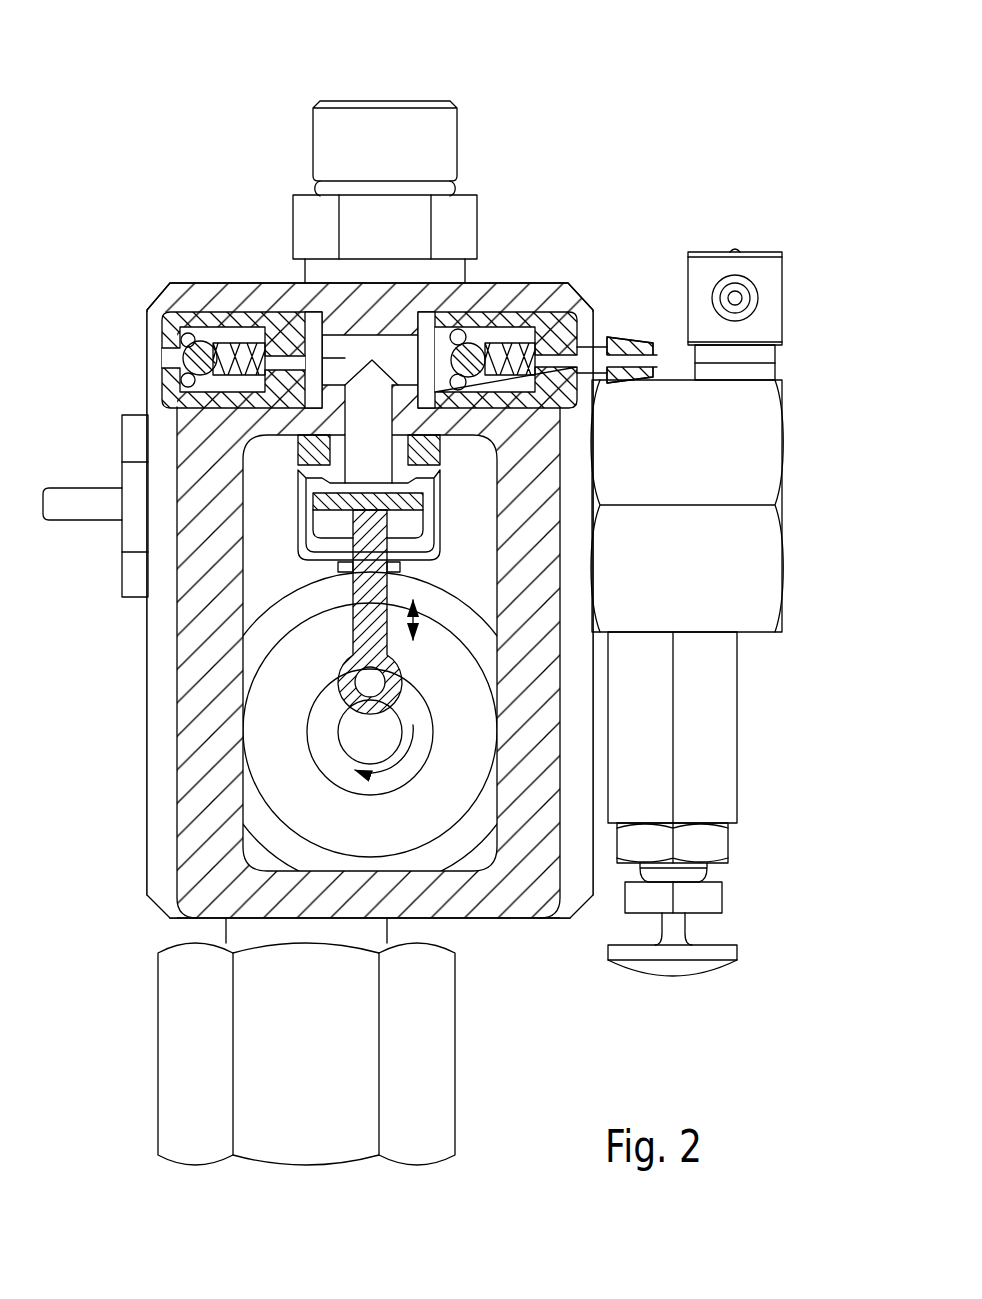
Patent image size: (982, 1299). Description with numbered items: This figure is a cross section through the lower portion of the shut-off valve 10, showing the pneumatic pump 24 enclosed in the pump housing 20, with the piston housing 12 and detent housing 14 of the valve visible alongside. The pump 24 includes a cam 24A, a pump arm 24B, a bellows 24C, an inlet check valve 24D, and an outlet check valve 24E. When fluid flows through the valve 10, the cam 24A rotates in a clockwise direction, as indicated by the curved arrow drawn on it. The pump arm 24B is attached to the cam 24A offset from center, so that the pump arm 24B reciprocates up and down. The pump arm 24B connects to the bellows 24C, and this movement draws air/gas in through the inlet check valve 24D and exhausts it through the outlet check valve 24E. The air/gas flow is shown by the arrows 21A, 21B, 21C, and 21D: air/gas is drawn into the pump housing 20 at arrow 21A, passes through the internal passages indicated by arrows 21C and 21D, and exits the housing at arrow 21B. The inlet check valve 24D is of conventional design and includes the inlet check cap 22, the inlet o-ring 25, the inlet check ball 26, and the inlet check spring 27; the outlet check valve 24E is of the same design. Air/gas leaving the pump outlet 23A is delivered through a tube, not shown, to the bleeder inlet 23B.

The shut-off valve 10 is at (155, 148).
The piston housing 12 is at (783, 452).
The detent housing 14 is at (737, 712).
The pump housing 20 is at (190, 848).
The air/gas flow arrow 21A is at (150, 358).
The air/gas flow arrow 21B is at (685, 358).
The air/gas flow arrow 21C is at (367, 420).
The air/gas flow arrow 21D is at (440, 358).
The inlet check cap 22 is at (165, 341).
The pump outlet 23A is at (620, 337).
The bleeder inlet 23B is at (760, 292).
The pump 24 is at (246, 577).
The cam 24A is at (320, 738).
The pump arm 24B is at (368, 623).
The bellows 24C is at (297, 558).
The inlet check valve 24D is at (190, 263).
The outlet check valve 24E is at (543, 320).
The inlet o-ring 25 is at (185, 382).
The inlet check ball 26 is at (183, 348).
The inlet check spring 27 is at (240, 347).